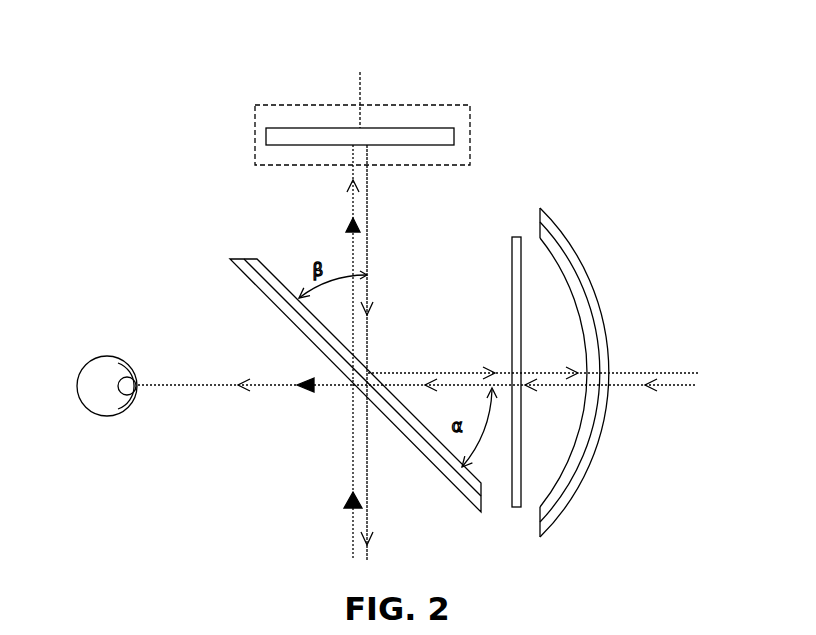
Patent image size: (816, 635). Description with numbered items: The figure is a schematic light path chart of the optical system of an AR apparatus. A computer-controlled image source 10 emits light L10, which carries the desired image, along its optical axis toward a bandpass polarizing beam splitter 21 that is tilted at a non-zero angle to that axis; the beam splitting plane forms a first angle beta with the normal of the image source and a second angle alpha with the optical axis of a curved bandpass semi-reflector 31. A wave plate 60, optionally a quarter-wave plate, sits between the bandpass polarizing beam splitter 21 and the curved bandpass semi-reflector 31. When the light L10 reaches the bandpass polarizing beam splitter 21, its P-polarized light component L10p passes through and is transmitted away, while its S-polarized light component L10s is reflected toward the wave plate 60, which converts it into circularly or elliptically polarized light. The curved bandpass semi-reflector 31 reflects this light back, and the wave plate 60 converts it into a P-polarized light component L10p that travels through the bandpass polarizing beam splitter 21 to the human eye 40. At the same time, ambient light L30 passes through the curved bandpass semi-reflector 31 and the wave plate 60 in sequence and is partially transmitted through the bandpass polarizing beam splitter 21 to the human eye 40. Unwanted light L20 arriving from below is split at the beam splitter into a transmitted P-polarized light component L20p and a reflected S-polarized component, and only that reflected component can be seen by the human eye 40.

The image source 10 is at (272, 110).
The bandpass polarizing beam splitter 21 is at (238, 264).
The curved bandpass semi-reflector 31 is at (600, 318).
The human eye 40 is at (80, 386).
The wave plate 60 is at (518, 270).
The light L10 is at (394, 265).
The S-polarized light component L10s is at (534, 352).
The P-polarized light component L10p is at (288, 469).
The unwanted light L20 is at (321, 470).
The P-polarized light component L20p is at (318, 262).
The ambient light L30 is at (524, 407).